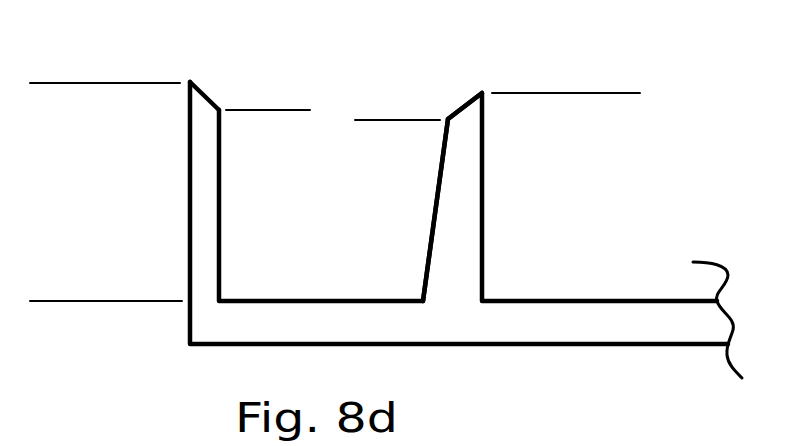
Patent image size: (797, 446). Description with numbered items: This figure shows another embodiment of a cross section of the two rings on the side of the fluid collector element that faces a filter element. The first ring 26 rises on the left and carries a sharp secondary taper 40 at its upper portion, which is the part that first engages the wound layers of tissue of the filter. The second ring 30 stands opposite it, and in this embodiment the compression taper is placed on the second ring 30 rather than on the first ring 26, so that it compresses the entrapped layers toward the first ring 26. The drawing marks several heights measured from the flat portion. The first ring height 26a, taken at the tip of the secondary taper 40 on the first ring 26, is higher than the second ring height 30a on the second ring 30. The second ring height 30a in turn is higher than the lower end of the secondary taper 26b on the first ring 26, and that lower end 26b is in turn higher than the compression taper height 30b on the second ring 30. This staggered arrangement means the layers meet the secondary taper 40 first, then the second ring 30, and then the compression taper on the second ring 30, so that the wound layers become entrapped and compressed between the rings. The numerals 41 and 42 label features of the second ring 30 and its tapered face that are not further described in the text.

The first ring 26 is at (188, 322).
The second ring 30 is at (483, 268).
The secondary taper 40 is at (208, 95).
The tip of right wall 41 is at (468, 103).
The slanted sidewall 42 is at (440, 163).
The first ring height 26a is at (57, 83).
The lower end of the secondary taper 26b is at (283, 110).
The second ring height 30a is at (615, 93).
The compression taper height 30b is at (384, 120).